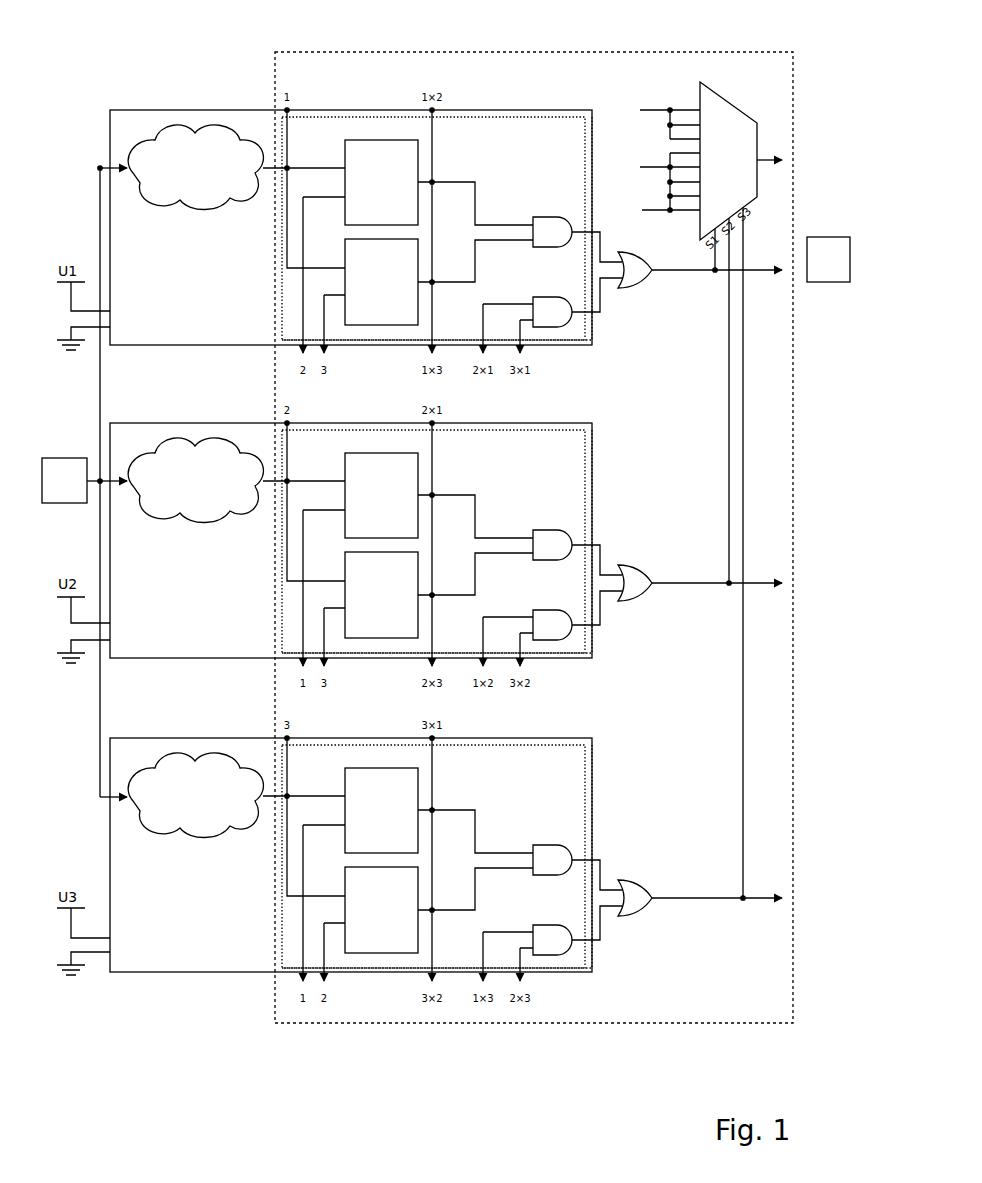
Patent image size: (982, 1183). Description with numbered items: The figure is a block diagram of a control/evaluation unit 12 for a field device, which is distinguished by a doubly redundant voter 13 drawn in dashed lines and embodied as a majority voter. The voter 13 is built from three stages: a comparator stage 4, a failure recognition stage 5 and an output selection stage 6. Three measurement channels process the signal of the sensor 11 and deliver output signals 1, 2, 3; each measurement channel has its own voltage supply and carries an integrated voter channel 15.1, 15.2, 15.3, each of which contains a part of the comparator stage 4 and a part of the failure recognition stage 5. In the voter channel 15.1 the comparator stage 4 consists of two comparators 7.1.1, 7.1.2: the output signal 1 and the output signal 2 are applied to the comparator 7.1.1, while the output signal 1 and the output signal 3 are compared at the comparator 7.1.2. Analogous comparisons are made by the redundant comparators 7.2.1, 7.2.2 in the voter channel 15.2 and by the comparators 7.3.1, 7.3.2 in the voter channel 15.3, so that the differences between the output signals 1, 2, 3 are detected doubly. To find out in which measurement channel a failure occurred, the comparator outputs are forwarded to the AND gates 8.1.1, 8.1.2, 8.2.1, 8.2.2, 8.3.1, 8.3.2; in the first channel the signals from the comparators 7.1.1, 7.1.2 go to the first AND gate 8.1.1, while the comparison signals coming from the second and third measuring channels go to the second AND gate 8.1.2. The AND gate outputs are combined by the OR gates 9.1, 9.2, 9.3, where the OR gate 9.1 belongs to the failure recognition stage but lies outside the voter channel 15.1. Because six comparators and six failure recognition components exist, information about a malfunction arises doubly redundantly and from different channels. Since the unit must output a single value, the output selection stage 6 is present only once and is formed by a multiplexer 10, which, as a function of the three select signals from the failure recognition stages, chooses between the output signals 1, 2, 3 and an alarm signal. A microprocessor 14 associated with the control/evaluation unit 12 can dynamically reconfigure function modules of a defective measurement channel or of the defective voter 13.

The output signal of measurement channel MK1 1 is at (258, 182).
The output signal of measurement channel MK2 2 is at (195, 493).
The output signal of measurement channel MK3 3 is at (195, 808).
The comparator stage 4 is at (383, 92).
The failure recognition stage 5 is at (565, 92).
The output selection stage 6 is at (730, 90).
The comparator 7.1.1 is at (381, 182).
The comparator 7.1.2 is at (381, 282).
The comparator 7.2.1 is at (381, 495).
The comparator 7.2.2 is at (381, 595).
The comparator 7.3.1 is at (381, 810).
The comparator 7.3.2 is at (381, 910).
The first AND gate 8.1.1 is at (574, 230).
The second AND gate 8.1.2 is at (574, 302).
The AND gate 8.2.1 is at (574, 543).
The AND gate 8.2.2 is at (574, 615).
The AND gate 8.3.1 is at (574, 858).
The AND gate 8.3.2 is at (574, 930).
The OR gate 9.1 is at (700, 270).
The OR gate 9.2 is at (700, 583).
The OR gate 9.3 is at (700, 898).
The multiplexer 10 is at (742, 108).
The sensor 11 is at (72, 503).
The control/evaluation unit 12 is at (360, 1066).
The voter 13 is at (498, 1023).
The microprocessor 14 is at (838, 282).
The voter channel 15.1 is at (588, 326).
The voter channel 15.2 is at (465, 556).
The voter channel 15.3 is at (464, 871).